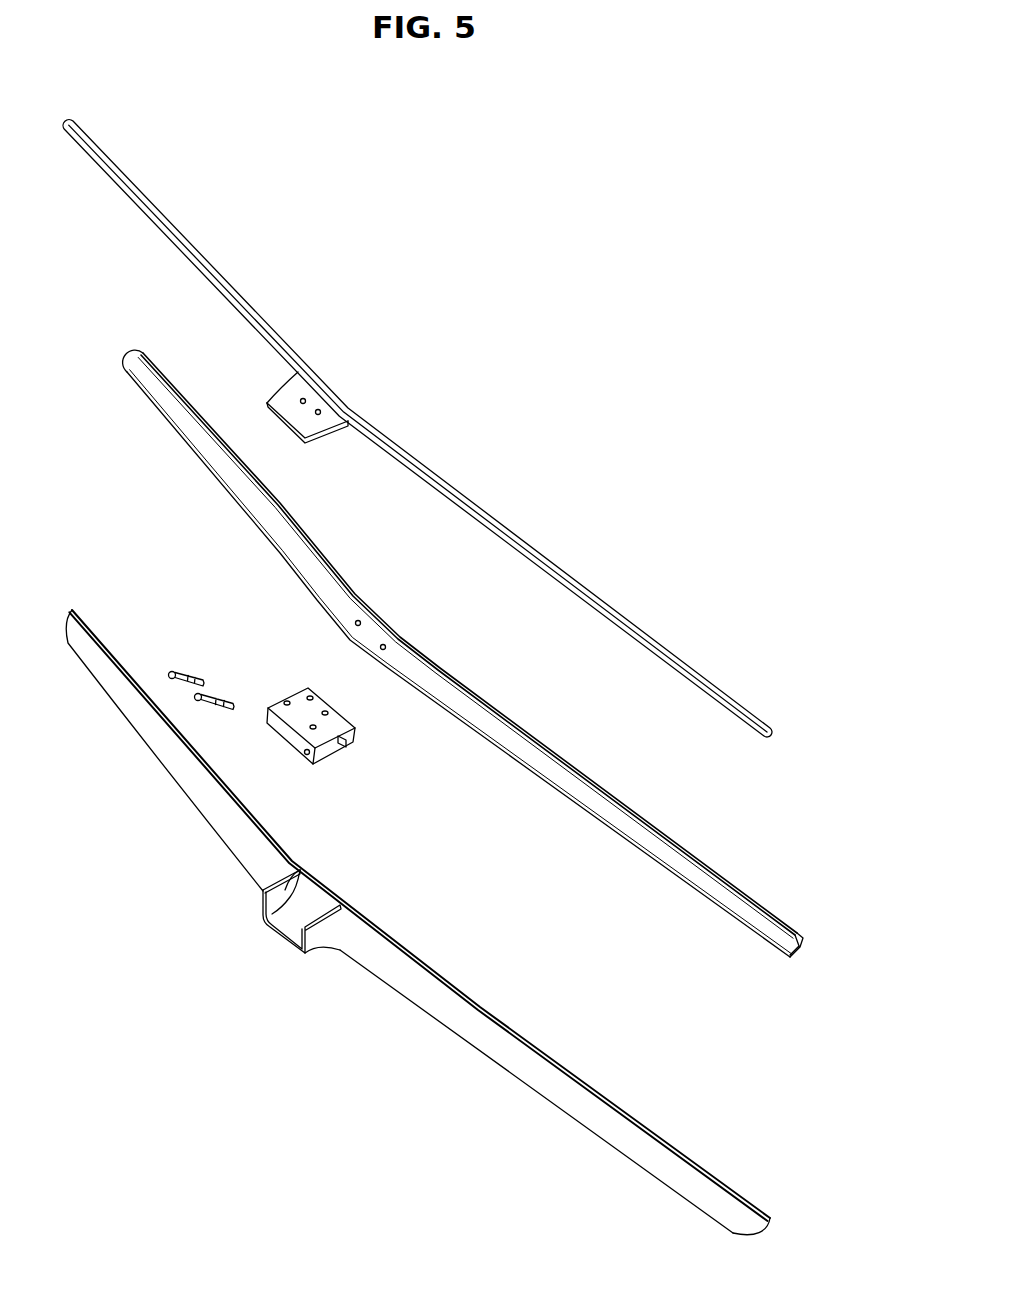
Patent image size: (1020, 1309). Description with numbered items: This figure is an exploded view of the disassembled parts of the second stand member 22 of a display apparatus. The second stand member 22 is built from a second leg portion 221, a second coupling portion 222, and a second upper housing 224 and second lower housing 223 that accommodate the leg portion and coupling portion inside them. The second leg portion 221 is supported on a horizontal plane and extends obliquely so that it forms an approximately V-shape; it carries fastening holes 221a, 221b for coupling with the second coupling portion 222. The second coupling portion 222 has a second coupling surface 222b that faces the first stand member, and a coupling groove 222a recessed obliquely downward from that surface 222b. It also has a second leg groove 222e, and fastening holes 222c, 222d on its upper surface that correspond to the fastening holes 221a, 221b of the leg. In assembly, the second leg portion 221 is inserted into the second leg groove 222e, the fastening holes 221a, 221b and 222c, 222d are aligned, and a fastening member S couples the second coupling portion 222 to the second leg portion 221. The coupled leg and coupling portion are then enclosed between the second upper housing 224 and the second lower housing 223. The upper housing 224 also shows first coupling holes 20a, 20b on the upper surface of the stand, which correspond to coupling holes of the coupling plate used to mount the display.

The second stand member 22 is at (560, 254).
The second upper housing 224 is at (614, 587).
The first coupling hole 20a is at (303, 399).
The first coupling hole 20b is at (318, 410).
The second leg portion 221 is at (603, 775).
The fastening hole 221a is at (358, 621).
The fastening hole 221b is at (383, 645).
The second coupling portion 222 is at (359, 799).
The coupling groove 222a is at (309, 754).
The second coupling surface 222b is at (278, 737).
The fastening hole 222c is at (286, 701).
The fastening hole 222d is at (312, 725).
The second leg groove 222e is at (347, 742).
The second lower housing 223 is at (605, 1073).
The fastening member S is at (170, 663).